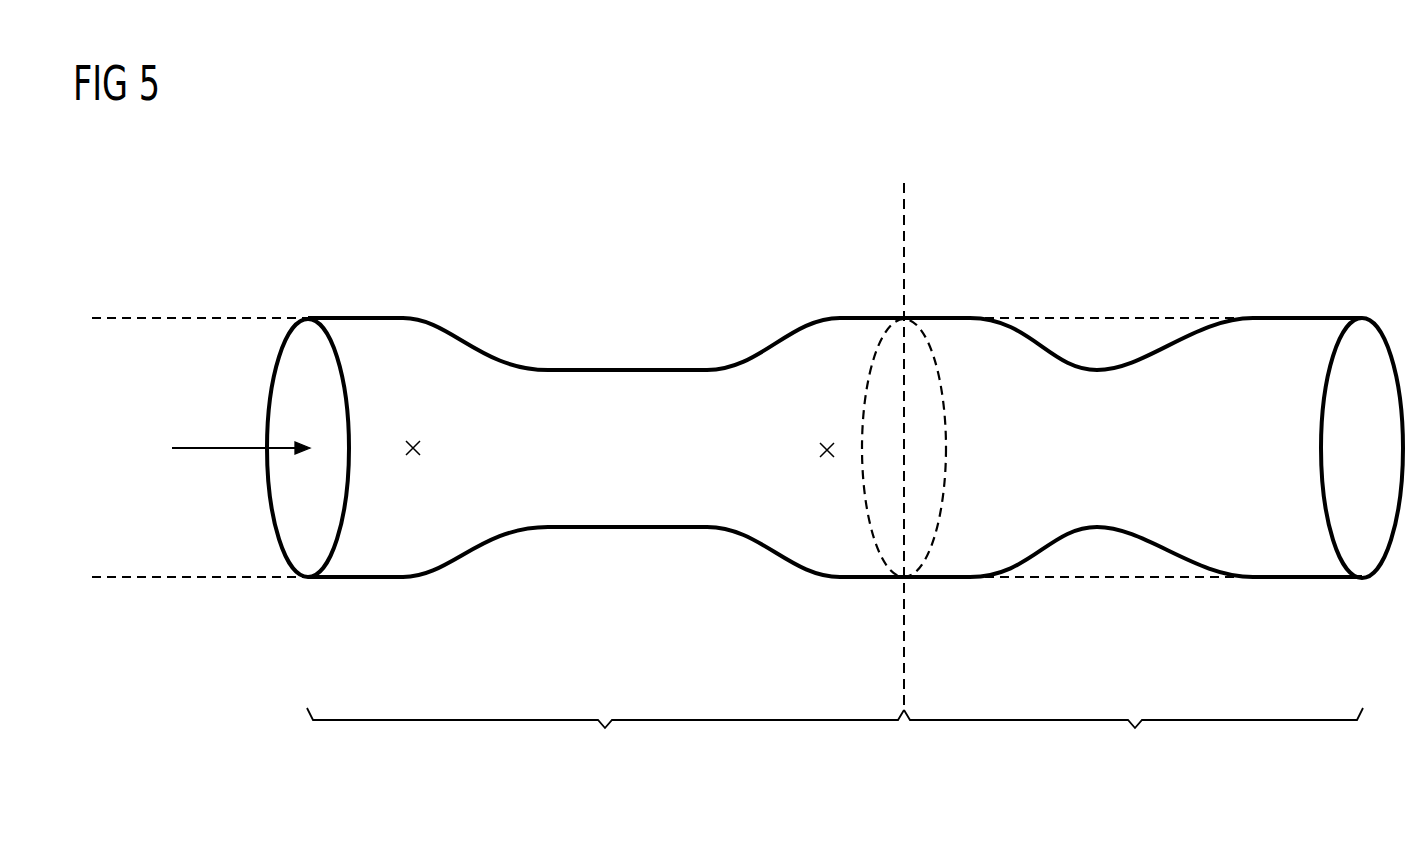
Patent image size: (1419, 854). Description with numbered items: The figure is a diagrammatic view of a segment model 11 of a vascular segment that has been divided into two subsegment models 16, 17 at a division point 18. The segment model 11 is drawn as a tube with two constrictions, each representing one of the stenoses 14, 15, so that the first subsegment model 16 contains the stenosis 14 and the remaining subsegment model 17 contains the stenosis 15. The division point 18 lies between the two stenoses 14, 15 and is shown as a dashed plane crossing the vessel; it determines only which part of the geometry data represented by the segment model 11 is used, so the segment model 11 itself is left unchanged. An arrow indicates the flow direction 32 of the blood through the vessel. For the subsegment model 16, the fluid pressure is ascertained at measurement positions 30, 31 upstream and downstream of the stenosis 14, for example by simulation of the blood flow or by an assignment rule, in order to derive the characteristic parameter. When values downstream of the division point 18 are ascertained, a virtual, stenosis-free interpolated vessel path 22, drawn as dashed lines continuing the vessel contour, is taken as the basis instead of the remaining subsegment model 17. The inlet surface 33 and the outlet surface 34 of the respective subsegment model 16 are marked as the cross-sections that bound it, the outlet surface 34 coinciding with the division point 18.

The segment model 11 is at (835, 451).
The stenosis 14 is at (620, 604).
The stenosis 15 is at (1115, 604).
The subsegment model 16 is at (605, 734).
The subsegment model 17 is at (1133, 734).
The division point 18 is at (905, 204).
The interpolated vessel path 22 is at (195, 318).
The measurement position 30 is at (413, 443).
The measurement position 31 is at (827, 445).
The flow direction 32 is at (198, 448).
The inlet surface 33 is at (291, 356).
The outlet surface 34 is at (886, 358).